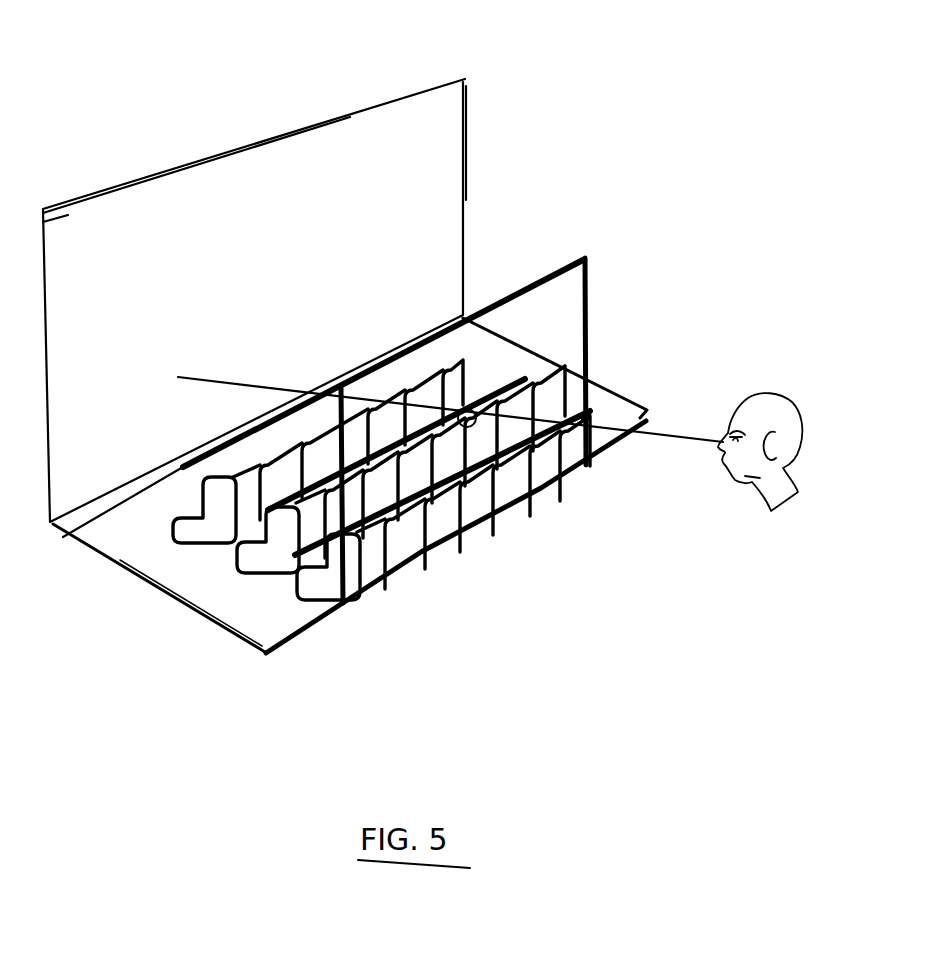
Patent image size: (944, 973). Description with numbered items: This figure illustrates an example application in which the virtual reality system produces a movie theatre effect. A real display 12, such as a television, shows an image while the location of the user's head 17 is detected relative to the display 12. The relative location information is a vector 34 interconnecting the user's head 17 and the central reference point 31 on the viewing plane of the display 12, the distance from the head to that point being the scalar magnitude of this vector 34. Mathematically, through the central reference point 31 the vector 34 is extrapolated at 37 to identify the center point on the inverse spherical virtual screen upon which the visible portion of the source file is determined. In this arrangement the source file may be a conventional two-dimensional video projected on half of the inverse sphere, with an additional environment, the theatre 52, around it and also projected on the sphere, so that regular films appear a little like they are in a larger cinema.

The display 12 is at (600, 284).
The user's head 17 is at (800, 417).
The central reference point 31 is at (489, 401).
The vector 34 is at (686, 432).
The extrapolation of the vector 37 is at (242, 400).
The theatre 52 is at (439, 82).